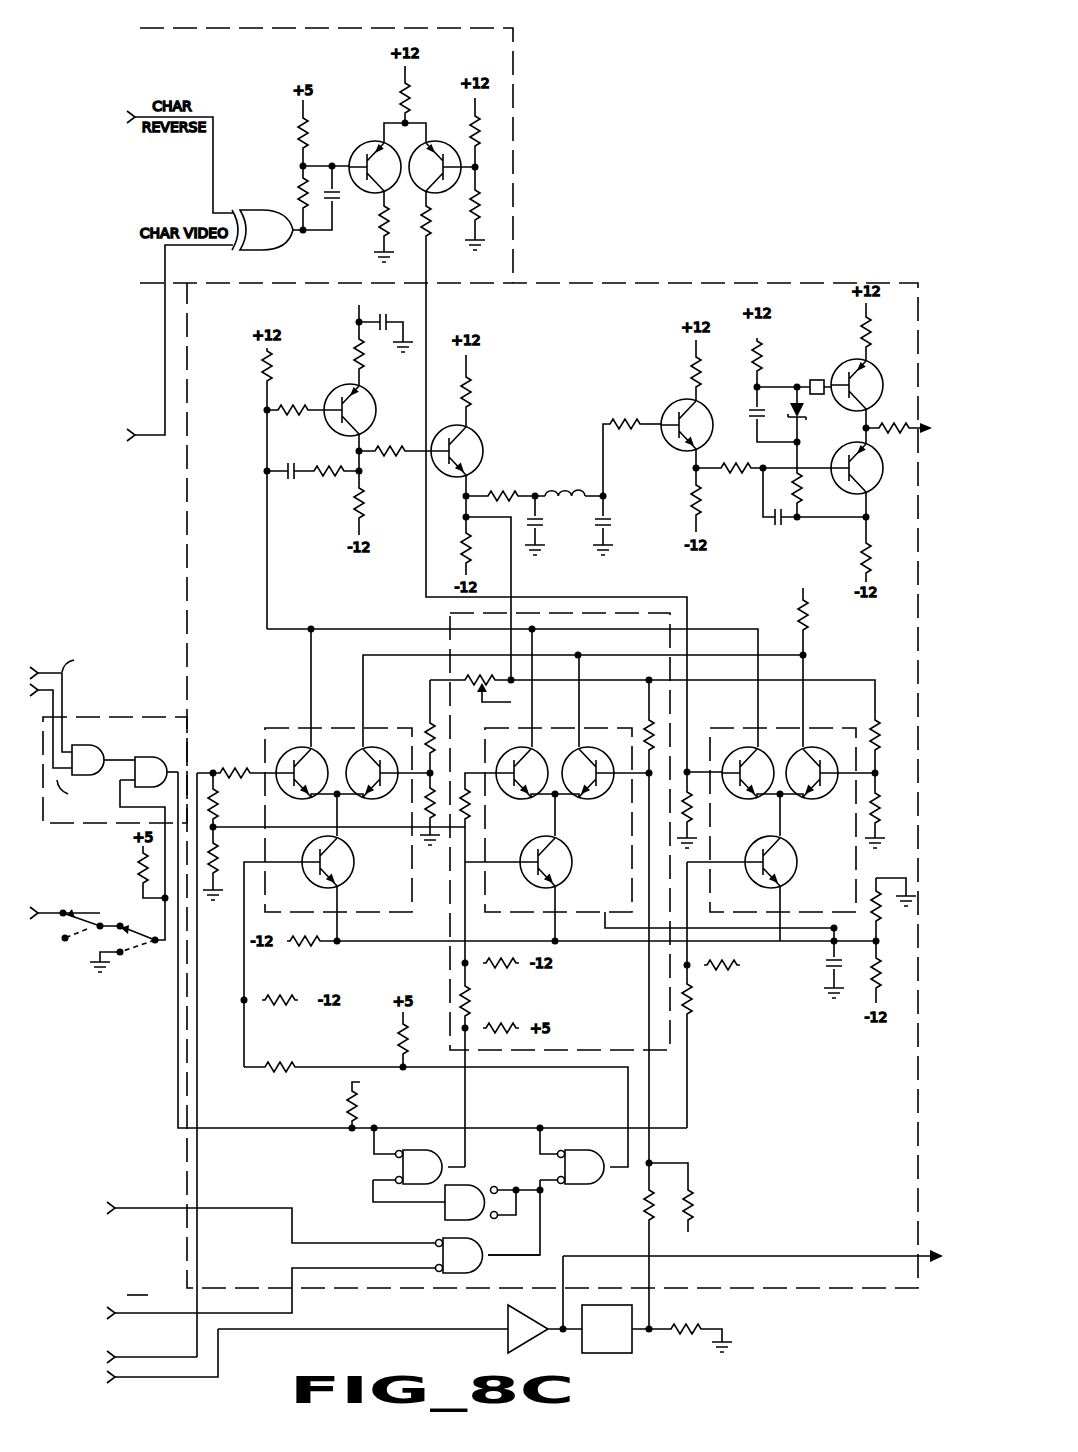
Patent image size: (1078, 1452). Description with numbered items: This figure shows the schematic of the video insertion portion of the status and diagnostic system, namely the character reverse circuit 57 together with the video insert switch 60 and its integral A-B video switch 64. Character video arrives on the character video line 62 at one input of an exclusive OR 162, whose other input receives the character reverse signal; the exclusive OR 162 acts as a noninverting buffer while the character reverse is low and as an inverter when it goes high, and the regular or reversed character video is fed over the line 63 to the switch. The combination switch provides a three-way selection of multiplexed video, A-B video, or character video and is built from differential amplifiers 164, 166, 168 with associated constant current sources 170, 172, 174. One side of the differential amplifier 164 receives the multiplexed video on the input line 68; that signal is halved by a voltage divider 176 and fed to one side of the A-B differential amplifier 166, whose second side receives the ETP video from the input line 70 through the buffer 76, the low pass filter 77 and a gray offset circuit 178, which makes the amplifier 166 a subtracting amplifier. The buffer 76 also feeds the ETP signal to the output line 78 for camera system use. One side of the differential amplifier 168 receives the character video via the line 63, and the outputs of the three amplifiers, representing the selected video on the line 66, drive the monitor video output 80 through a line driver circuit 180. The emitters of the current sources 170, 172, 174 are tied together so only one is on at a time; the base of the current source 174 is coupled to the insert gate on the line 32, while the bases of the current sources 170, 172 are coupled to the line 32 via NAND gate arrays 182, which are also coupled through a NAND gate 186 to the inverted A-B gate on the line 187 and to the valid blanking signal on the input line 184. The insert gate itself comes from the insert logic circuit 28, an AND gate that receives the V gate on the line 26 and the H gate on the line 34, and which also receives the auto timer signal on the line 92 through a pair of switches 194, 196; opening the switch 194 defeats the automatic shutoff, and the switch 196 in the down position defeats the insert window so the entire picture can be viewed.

The character reverse circuit 57 is at (513, 47).
The video insert switch means 60 is at (665, 280).
The character video line 62 is at (136, 430).
The line 63 is at (430, 268).
The exclusive OR 162 is at (282, 244).
The line driver circuit 180 is at (632, 410).
The monitor video output 80 is at (924, 436).
The line 66 is at (534, 646).
The A-B video switch 64 is at (670, 1040).
The differential amplifier 164 is at (283, 728).
The differential amplifier 166 is at (592, 728).
The differential amplifier 168 is at (818, 728).
The constant current source 170 is at (354, 855).
The constant current source 172 is at (572, 855).
The constant current source 174 is at (797, 855).
The voltage divider 176 is at (215, 828).
The insert logic circuit 28 is at (143, 717).
The line 34 is at (50, 668).
The line 26 is at (60, 694).
The line 92 is at (53, 910).
The switch 196 is at (152, 931).
The switch 194 is at (84, 932).
The line 32 is at (232, 1140).
The NAND gate arrays 182 is at (504, 1153).
The NAND gate 186 is at (490, 1252).
The input line 184 is at (140, 1210).
The line 187 is at (130, 1316).
The input line 68 is at (125, 1352).
The input line 70 is at (130, 1380).
The buffer 76 is at (539, 1337).
The low pass filter 77 is at (634, 1344).
The output line 78 is at (912, 1254).
The gray offset circuit 178 is at (675, 1161).